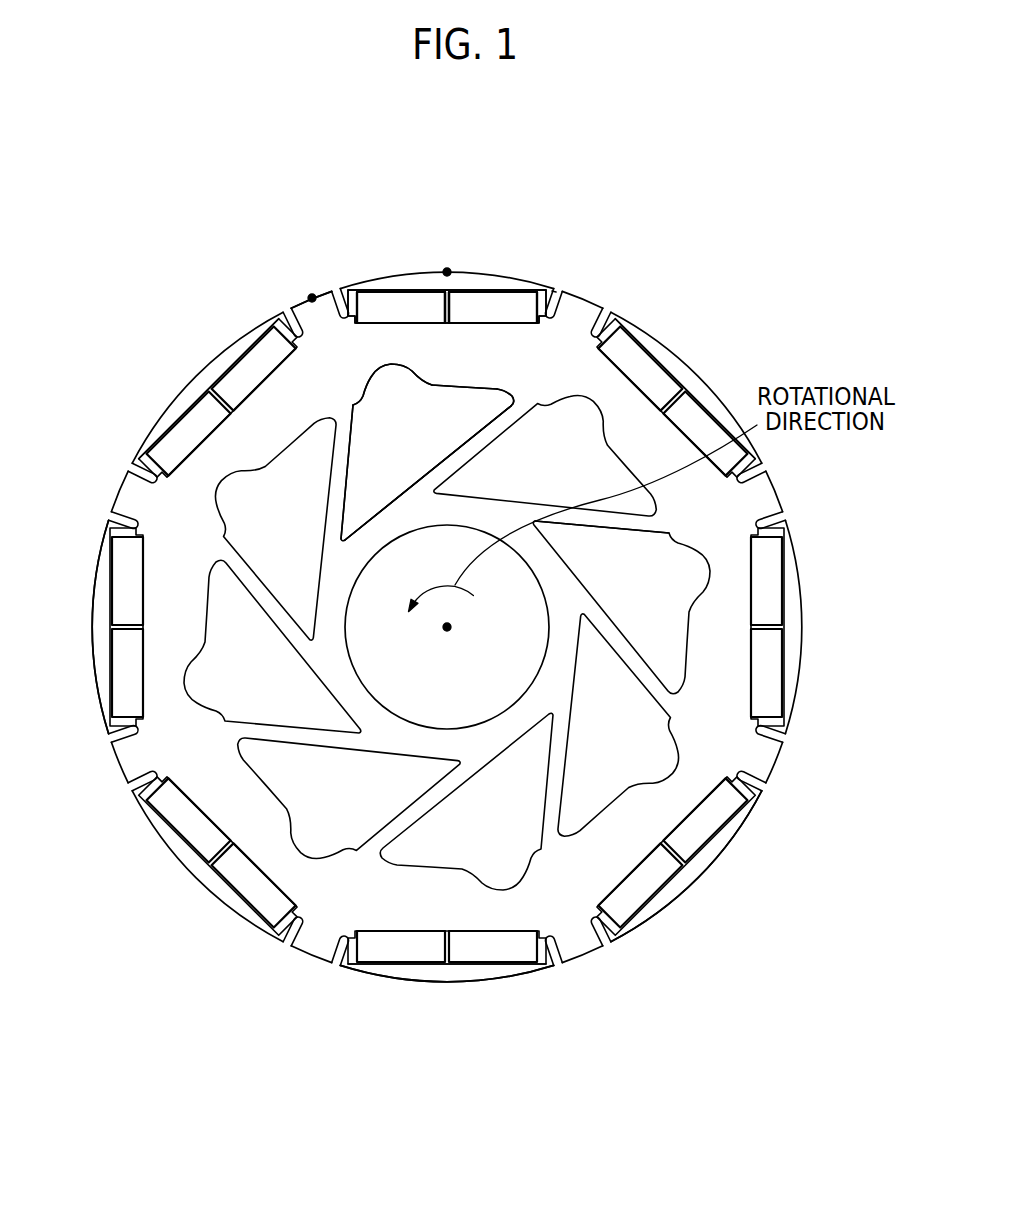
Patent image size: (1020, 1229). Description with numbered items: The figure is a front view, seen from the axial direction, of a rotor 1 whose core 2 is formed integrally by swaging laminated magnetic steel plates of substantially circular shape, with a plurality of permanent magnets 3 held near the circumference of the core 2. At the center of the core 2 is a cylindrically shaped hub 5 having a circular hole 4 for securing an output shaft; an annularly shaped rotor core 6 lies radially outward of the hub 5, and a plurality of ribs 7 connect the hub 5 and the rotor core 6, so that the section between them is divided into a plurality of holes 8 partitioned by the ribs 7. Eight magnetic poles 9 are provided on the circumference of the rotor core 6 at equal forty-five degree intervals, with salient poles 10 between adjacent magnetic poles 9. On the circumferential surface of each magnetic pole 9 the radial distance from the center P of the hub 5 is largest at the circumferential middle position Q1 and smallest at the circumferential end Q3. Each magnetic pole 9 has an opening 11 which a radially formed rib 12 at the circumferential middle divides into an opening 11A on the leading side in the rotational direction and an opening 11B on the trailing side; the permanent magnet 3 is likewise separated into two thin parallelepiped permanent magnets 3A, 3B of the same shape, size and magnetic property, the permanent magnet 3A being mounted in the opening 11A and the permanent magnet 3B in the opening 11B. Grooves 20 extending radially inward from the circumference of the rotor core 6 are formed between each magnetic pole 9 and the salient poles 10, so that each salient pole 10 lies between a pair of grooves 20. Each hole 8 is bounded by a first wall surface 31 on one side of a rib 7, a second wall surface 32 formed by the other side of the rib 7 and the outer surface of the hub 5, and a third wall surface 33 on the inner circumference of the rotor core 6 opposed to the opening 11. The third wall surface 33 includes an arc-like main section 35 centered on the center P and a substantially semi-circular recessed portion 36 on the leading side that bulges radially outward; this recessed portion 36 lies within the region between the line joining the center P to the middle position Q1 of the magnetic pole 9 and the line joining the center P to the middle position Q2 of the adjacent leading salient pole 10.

The rotor 1 is at (733, 241).
The core 2 is at (211, 898).
The permanent magnets 3 is at (447, 627).
The permanent magnet 3A is at (368, 297).
The permanent magnet 3B is at (513, 298).
The circular hole 4 is at (414, 716).
The hub 5 is at (495, 730).
The rotor core 6 is at (713, 740).
The ribs 7 is at (452, 452).
The holes 8 is at (357, 507).
The magnetic poles 9 is at (430, 272).
The salient poles 10 is at (562, 292).
The opening 11 is at (447, 627).
The opening 11A is at (388, 300).
The opening 11B is at (483, 300).
The rib 12 is at (449, 325).
The grooves 20 is at (290, 308).
The first wall surface 31 is at (349, 455).
The second wall surface 32 is at (441, 468).
The third wall surface 33 is at (486, 400).
The main section 35 is at (447, 388).
The recessed portion 36 is at (384, 368).
The center of the hub P is at (447, 632).
The circumferential middle position Q1 is at (448, 270).
The circumferential middle position Q2 is at (311, 297).
The circumferential end Q3 is at (552, 291).